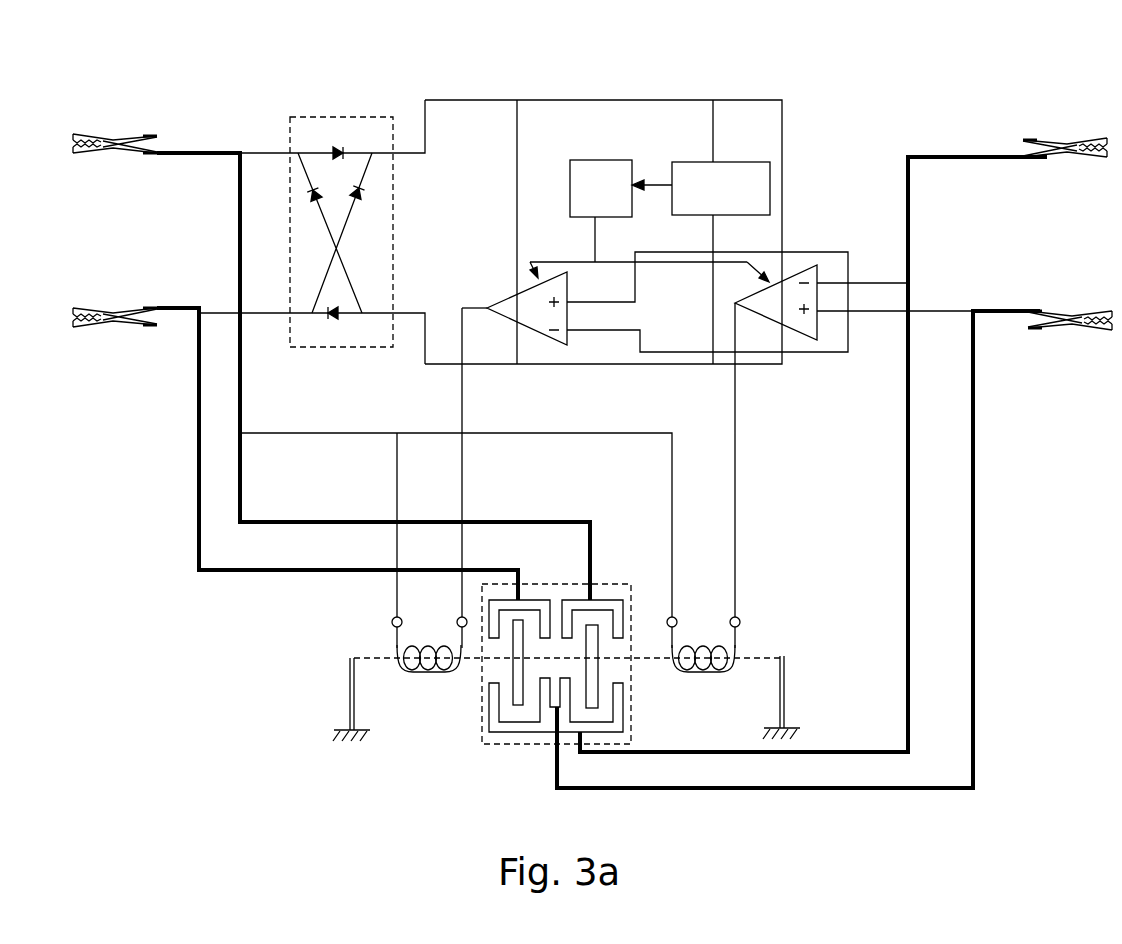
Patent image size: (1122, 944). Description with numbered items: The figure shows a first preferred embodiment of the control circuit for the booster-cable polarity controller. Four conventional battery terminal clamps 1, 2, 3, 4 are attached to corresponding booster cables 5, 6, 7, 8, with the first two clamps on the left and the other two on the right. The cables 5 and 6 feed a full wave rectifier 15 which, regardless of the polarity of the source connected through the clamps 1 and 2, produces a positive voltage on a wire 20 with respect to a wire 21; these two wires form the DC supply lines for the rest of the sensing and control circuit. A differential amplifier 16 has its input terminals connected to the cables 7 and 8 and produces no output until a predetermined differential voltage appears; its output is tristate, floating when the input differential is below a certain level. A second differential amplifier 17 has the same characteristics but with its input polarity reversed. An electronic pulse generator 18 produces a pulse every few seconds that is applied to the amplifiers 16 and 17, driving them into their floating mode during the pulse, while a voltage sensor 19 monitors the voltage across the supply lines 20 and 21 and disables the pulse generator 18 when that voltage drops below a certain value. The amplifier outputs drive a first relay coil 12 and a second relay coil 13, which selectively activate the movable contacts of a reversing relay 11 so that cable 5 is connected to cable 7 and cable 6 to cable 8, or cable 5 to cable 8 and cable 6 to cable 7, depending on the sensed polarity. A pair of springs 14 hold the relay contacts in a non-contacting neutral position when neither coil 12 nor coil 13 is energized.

The battery terminal clamp 1 is at (88, 136).
The battery terminal clamp 2 is at (90, 308).
The battery terminal clamp 3 is at (1080, 142).
The battery terminal clamp 4 is at (1088, 313).
The booster cable 5 is at (192, 152).
The booster cable 6 is at (165, 307).
The booster cable 7 is at (957, 155).
The booster cable 8 is at (1000, 310).
The reversing relay 11 is at (490, 742).
The first relay coil 12 is at (428, 672).
The second relay coil 13 is at (700, 668).
The spring 14 is at (349, 682).
The full wave rectifier 15 is at (358, 124).
The differential amplifier 16 is at (795, 272).
The differential amplifier 17 is at (515, 296).
The electronic pulse generator 18 is at (598, 163).
The voltage sensor 19 is at (720, 165).
The wire 20 is at (610, 100).
The wire 21 is at (680, 366).